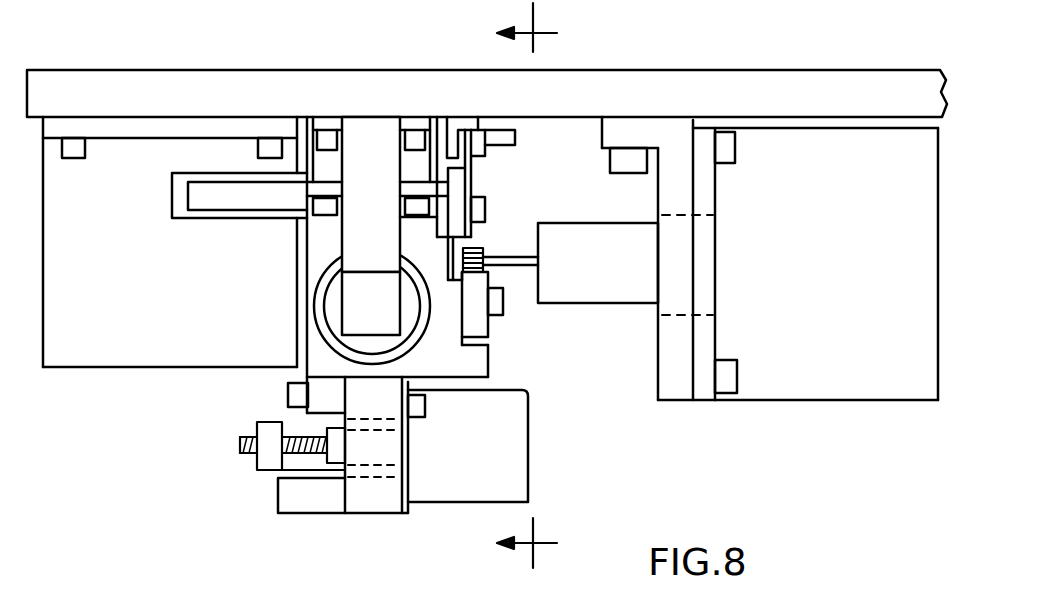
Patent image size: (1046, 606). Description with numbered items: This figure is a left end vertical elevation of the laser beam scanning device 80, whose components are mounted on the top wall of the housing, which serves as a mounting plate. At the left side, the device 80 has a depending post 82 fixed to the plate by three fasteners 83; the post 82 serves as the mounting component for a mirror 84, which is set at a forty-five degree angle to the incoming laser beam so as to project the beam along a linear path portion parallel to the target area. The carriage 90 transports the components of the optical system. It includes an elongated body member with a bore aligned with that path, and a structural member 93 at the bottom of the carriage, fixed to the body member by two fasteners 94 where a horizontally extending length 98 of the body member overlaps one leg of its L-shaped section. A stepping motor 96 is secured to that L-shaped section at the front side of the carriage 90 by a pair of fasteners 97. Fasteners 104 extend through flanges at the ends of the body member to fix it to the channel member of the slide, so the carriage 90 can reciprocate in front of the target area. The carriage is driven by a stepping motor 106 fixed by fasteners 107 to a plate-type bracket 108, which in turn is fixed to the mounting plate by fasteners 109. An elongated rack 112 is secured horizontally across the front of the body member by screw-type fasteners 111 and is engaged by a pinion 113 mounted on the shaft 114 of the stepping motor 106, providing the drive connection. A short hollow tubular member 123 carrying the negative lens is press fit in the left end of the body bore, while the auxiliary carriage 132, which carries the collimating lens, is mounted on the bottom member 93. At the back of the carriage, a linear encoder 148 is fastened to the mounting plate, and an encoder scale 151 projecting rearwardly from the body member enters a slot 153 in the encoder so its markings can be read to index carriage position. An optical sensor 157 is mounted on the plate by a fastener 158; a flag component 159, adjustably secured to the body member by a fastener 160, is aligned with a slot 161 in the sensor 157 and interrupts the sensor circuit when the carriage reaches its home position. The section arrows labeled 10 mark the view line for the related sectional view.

The section line 10 is at (529, 286).
The scanning device 80 is at (618, 478).
The depending post 82 is at (342, 226).
The fasteners 83 is at (407, 150).
The mirror 84 is at (410, 283).
The carriage 90 is at (307, 268).
The structural member 93 is at (352, 521).
The fasteners 94 is at (288, 397).
The stepping motor 96 is at (529, 431).
The fasteners 97 is at (428, 408).
The horizontally extending length 98 is at (347, 399).
The fasteners 104 is at (400, 222).
The stepping motor 106 is at (815, 403).
The fasteners 107 is at (736, 166).
The plate-type bracket 108 is at (658, 390).
The fasteners 109 is at (637, 175).
The screw-type fasteners 111 is at (505, 313).
The elongated rack 112 is at (490, 338).
The pinion 113 is at (475, 250).
The shaft 114 is at (536, 259).
The tubular member 123 is at (411, 349).
The auxiliary carriage 132 is at (259, 470).
The linear encoder 148 is at (124, 371).
The encoder scale 151 is at (219, 222).
The slot 153 is at (172, 202).
The optical sensor 157 is at (531, 117).
The fastener 158 is at (517, 143).
The flag component 159 is at (472, 189).
The fastener 160 is at (487, 211).
The slot 161 is at (473, 160).